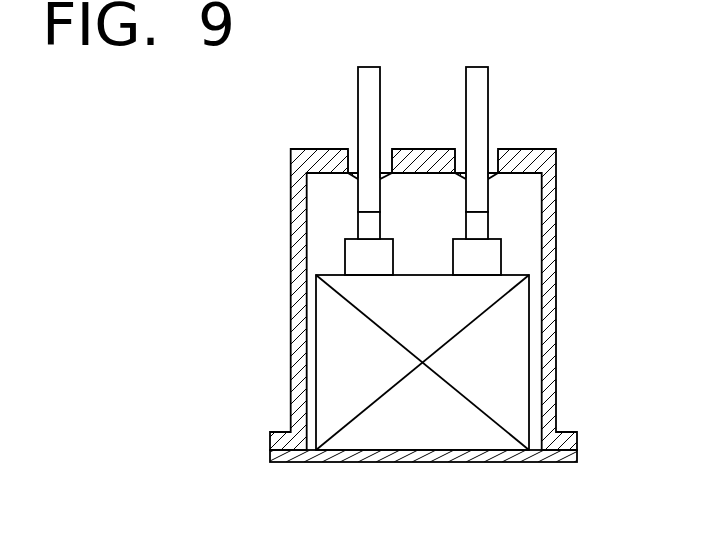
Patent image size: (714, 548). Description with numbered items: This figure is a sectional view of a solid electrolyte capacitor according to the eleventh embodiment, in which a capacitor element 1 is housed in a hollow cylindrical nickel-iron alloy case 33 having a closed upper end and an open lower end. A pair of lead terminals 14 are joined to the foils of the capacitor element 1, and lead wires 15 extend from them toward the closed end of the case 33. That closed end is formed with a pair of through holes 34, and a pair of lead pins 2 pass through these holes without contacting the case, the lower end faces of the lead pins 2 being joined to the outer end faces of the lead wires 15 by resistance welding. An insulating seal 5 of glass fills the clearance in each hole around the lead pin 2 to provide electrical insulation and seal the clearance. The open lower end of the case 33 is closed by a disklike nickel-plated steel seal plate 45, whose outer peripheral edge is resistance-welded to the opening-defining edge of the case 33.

The capacitor element 1 is at (527, 356).
The lead pin 2 is at (360, 107).
The insulating seal 5 is at (386, 148).
The lead terminal 14 is at (353, 262).
The lead wire 15 is at (357, 230).
The case 33 is at (557, 288).
The through hole 34 is at (355, 150).
The seal plate 45 is at (537, 461).